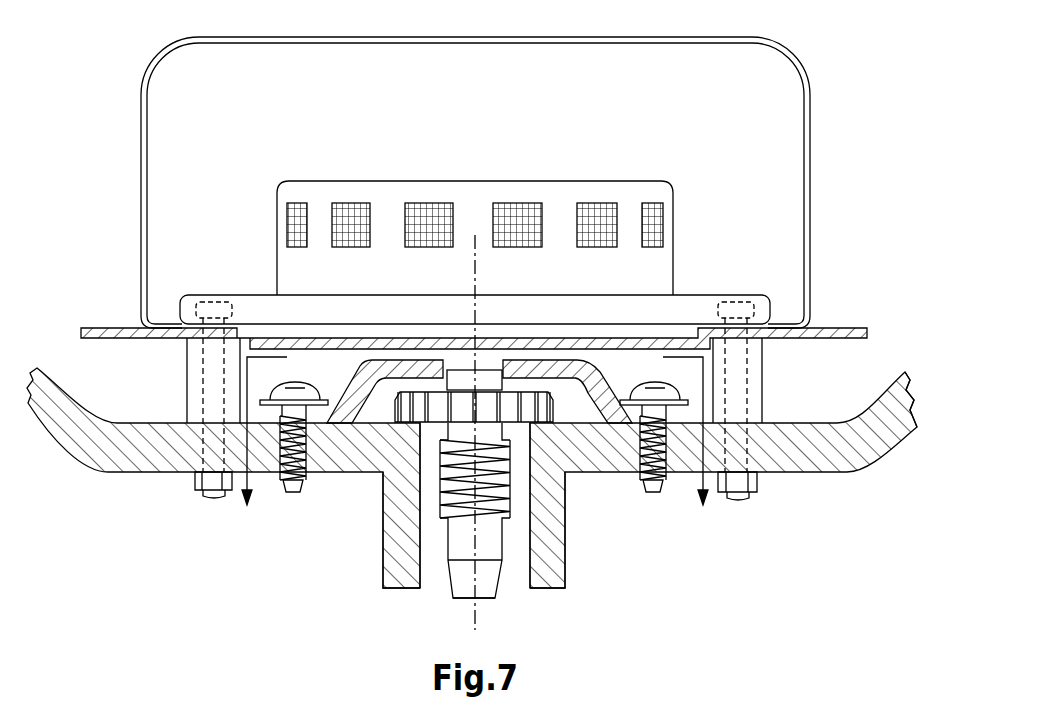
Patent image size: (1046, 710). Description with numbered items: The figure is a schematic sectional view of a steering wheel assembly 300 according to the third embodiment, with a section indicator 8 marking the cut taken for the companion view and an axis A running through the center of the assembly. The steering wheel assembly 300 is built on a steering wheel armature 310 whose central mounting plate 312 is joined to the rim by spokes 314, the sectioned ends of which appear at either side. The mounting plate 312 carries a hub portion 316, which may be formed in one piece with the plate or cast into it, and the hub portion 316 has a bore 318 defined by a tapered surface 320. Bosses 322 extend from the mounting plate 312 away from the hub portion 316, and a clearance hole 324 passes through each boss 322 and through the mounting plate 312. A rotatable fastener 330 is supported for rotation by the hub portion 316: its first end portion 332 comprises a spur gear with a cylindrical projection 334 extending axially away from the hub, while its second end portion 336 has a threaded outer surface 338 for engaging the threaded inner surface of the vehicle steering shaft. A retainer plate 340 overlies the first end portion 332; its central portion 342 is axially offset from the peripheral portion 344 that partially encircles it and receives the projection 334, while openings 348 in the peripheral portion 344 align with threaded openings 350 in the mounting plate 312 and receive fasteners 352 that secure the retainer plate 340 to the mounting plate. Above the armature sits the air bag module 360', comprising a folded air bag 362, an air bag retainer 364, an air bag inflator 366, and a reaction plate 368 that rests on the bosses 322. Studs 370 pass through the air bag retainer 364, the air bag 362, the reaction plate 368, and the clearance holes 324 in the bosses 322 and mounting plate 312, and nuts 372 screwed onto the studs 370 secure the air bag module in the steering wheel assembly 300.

The steering wheel assembly 300 is at (862, 186).
The steering wheel armature 310 is at (475, 475).
The central mounting plate 312 is at (775, 443).
The spokes 314 is at (860, 410).
The hub portion 316 is at (553, 523).
The bore 318 is at (432, 462).
The tapered surface 320 is at (535, 568).
The bosses 322 is at (755, 380).
The clearance hole 324 is at (203, 375).
The rotatable fastener 330 is at (433, 577).
The first end portion 332 is at (532, 405).
The cylindrical projection 334 is at (490, 380).
The second end portion 336 is at (430, 550).
The threaded outer surface 338 is at (465, 500).
The retainer plate 340 is at (410, 332).
The central portion 342 is at (423, 368).
The peripheral portion 344 is at (224, 462).
The openings 348 is at (266, 408).
The threaded openings 350 is at (684, 499).
The fasteners 352 is at (658, 490).
The cover 360' is at (505, 165).
The folded air bag 362 is at (563, 55).
The air bag retainer 364 is at (178, 308).
The air bag inflator 366 is at (275, 208).
The reaction plate 368 is at (825, 330).
The studs 370 is at (735, 302).
The nuts 372 is at (193, 480).
The section line 8- 8 is at (475, 447).
The axis A is at (478, 615).